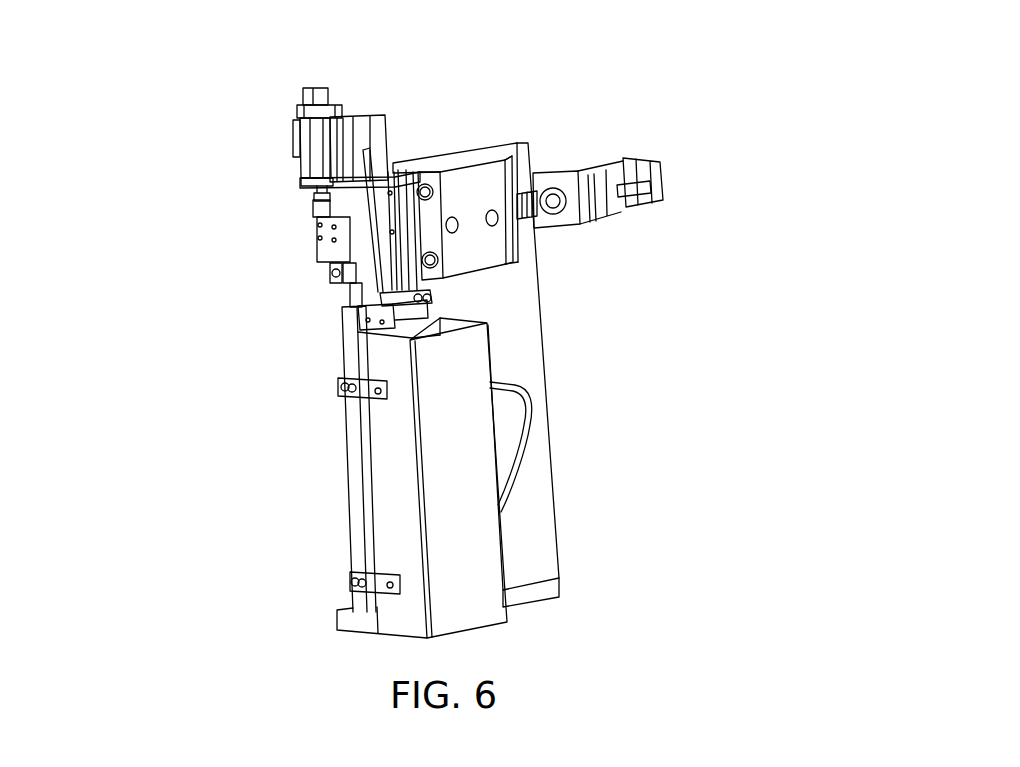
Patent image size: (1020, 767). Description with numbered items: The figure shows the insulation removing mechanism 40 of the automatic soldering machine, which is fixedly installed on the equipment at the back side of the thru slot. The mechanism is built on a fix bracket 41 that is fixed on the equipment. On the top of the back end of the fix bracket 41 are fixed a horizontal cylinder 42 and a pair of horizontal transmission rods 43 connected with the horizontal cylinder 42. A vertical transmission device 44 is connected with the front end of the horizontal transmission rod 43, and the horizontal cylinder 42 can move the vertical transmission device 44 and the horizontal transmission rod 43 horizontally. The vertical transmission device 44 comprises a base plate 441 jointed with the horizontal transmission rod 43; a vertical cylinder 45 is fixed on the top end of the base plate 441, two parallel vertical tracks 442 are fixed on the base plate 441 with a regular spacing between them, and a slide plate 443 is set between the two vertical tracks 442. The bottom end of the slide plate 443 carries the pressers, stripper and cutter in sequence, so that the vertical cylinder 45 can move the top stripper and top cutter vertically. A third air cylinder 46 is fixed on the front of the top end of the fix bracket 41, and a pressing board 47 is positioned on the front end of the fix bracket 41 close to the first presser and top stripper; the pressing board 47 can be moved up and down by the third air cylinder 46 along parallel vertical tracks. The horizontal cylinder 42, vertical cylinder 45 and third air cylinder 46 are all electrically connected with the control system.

The insulation removing mechanism 40 is at (120, 42).
The fix bracket 41 is at (517, 513).
The horizontal cylinder 42 is at (619, 200).
The horizontal transmission rod 43 is at (515, 165).
The vertical transmission device 44 is at (318, 204).
The base plate 441 is at (402, 178).
The vertical track 442 is at (398, 168).
The slide plate 443 is at (375, 147).
The vertical cylinder 45 is at (352, 155).
The third air cylinder 46 is at (297, 102).
The pressing board 47 is at (347, 242).